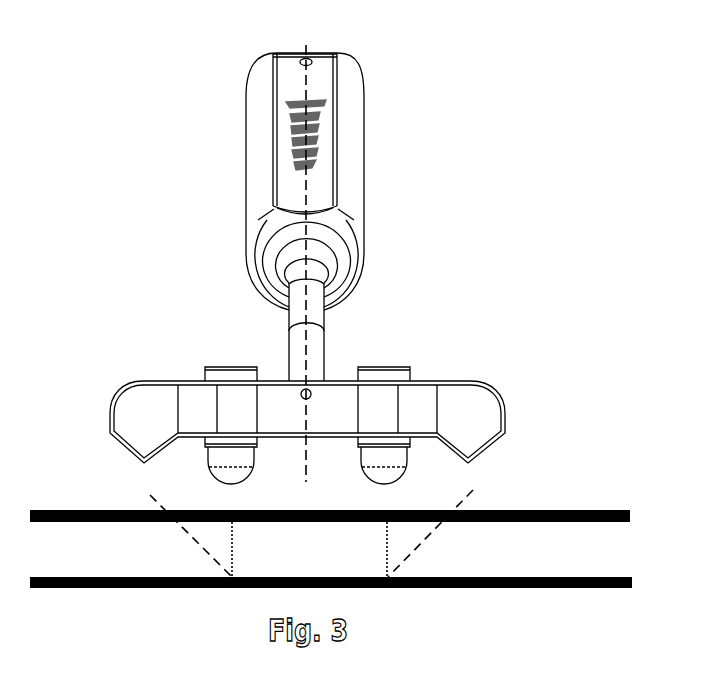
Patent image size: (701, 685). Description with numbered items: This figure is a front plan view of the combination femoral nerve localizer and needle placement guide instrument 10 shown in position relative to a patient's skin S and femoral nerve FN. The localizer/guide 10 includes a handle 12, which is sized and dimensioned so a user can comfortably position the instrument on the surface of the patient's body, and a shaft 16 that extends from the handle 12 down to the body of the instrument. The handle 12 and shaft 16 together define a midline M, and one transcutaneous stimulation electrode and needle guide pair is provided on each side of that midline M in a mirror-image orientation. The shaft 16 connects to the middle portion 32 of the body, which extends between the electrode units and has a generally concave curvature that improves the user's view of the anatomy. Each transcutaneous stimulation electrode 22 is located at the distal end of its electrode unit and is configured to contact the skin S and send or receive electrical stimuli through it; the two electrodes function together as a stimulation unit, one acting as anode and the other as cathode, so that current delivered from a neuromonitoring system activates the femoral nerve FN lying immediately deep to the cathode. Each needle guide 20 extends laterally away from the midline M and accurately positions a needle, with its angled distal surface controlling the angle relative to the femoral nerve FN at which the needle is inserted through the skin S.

The combination femoral nerve localizer and needle placement guide instrument 10 is at (526, 136).
The handle 12 is at (247, 183).
The shaft 16 is at (325, 353).
The needle guide 20 is at (93, 450).
The transcutaneous stimulation electrode 22 is at (234, 513).
The middle portion 32 is at (282, 418).
The midline M is at (303, 63).
The skin S is at (630, 509).
The femoral nerve FN is at (620, 573).